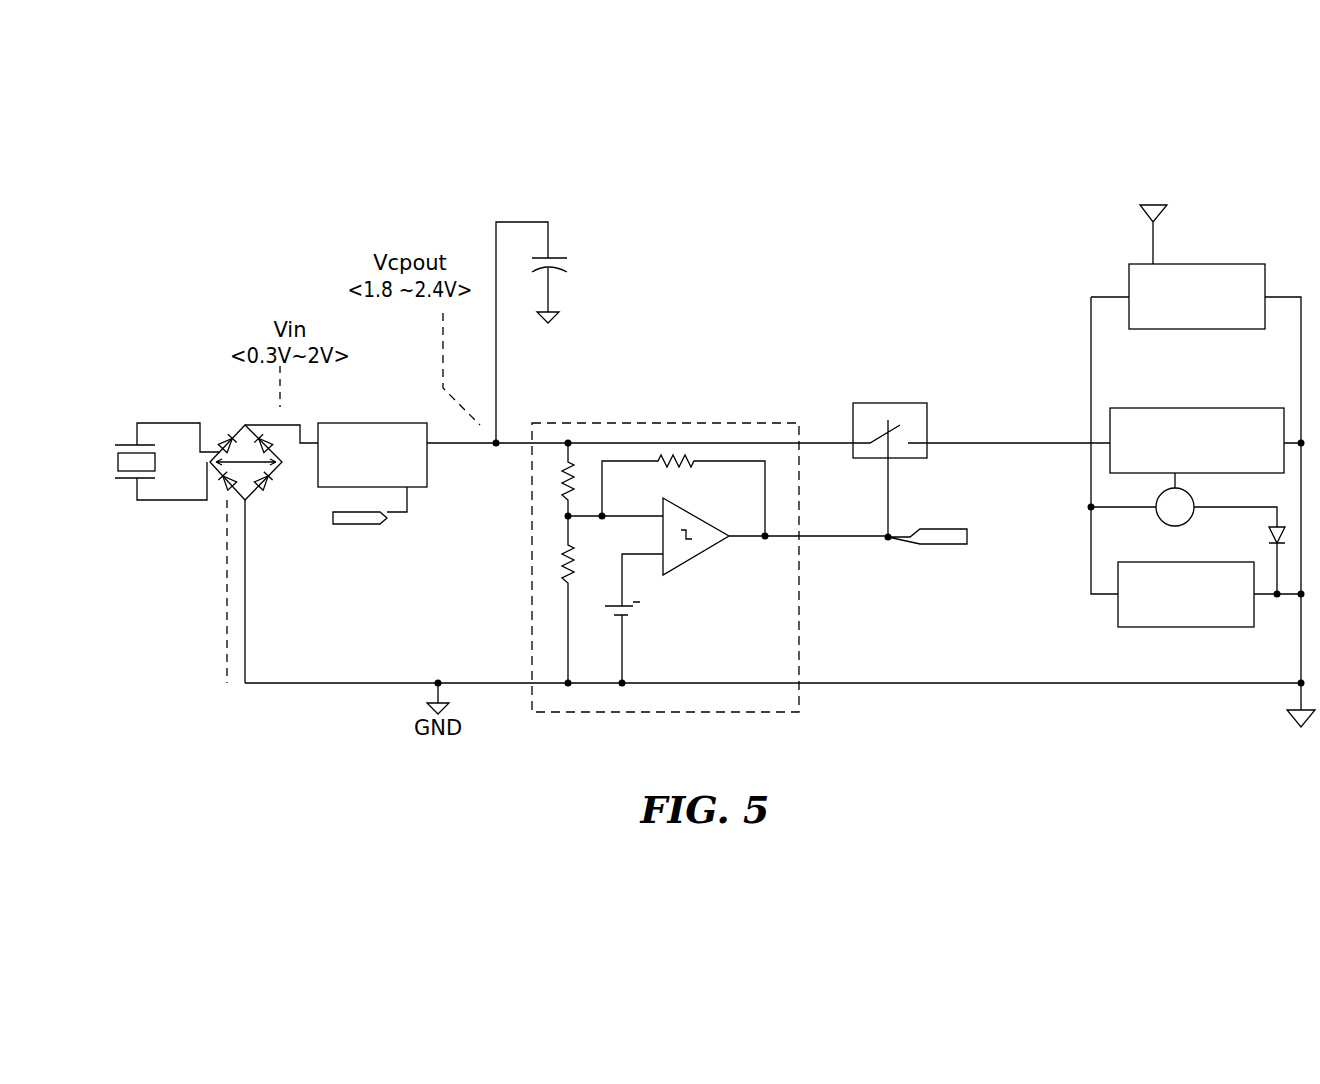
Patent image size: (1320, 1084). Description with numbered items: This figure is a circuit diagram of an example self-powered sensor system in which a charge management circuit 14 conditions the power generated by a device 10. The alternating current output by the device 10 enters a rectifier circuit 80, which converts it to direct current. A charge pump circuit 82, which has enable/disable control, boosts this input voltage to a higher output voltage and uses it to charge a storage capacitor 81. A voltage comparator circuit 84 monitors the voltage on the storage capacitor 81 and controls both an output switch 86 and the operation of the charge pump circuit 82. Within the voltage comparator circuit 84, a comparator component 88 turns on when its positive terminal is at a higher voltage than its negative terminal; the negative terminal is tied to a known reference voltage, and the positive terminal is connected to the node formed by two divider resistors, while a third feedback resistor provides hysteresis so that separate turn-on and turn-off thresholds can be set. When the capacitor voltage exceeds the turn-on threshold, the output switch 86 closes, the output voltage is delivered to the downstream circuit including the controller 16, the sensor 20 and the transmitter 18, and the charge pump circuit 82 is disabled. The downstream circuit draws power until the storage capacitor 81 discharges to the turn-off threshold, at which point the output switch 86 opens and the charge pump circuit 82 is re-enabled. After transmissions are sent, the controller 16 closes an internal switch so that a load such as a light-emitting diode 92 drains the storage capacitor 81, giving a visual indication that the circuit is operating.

The device 10 is at (118, 462).
The power management circuit 14 is at (751, 290).
The controller 16 is at (1197, 440).
The transmitter 18 is at (1197, 267).
The sensor 20 is at (1186, 594).
The rectifier circuit 80 is at (245, 420).
The storage capacitor 81 is at (570, 265).
The charge pump circuit 82 is at (398, 423).
The voltage comparator circuit 84 is at (708, 545).
The output switch 86 is at (853, 420).
The comparator component 88 is at (697, 516).
The light-emitting diode 92 is at (1268, 535).